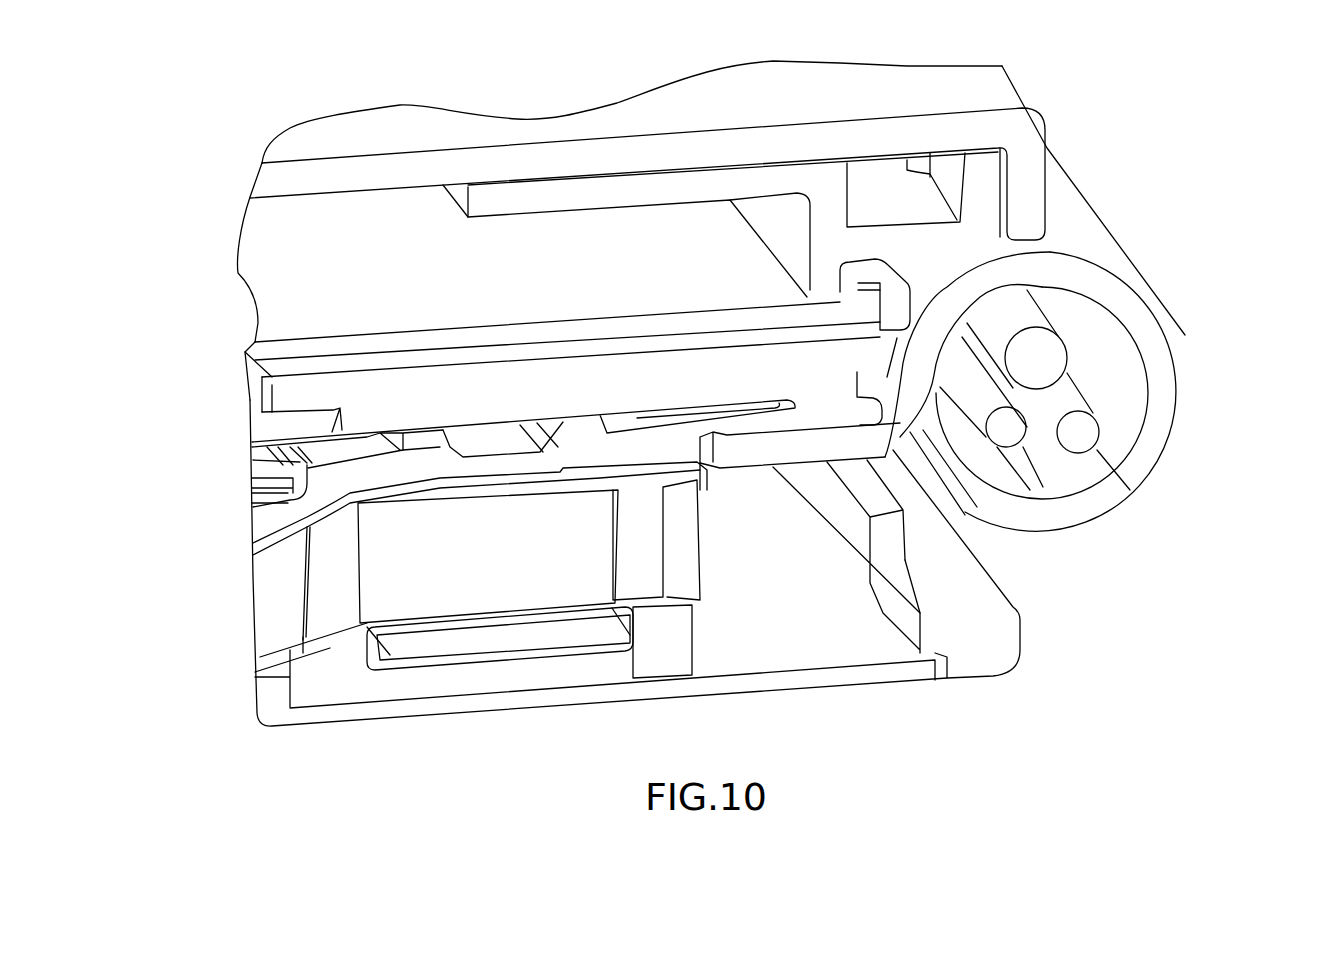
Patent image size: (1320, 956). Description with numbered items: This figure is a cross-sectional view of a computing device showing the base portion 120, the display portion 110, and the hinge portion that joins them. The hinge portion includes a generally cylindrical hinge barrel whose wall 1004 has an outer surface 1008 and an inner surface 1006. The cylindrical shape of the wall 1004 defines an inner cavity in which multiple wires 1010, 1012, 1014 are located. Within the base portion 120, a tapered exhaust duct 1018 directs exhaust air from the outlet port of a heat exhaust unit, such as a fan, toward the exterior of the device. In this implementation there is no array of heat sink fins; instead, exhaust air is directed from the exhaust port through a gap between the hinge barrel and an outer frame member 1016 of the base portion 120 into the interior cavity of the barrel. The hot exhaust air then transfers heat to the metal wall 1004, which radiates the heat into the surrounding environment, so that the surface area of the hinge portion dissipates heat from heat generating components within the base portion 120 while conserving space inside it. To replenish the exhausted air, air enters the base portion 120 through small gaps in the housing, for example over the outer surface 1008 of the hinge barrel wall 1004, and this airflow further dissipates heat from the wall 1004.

The display portion 110 is at (228, 157).
The base portion 120 is at (228, 385).
The hinge barrel wall 1004 is at (1160, 330).
The inner surface 1006 is at (1133, 437).
The outer surface 1008 is at (1183, 407).
The wire 1010 is at (1045, 350).
The wire 1012 is at (1065, 445).
The wire 1014 is at (1020, 447).
The outer frame member 1016 is at (887, 565).
The tapered exhaust duct 1018 is at (490, 583).